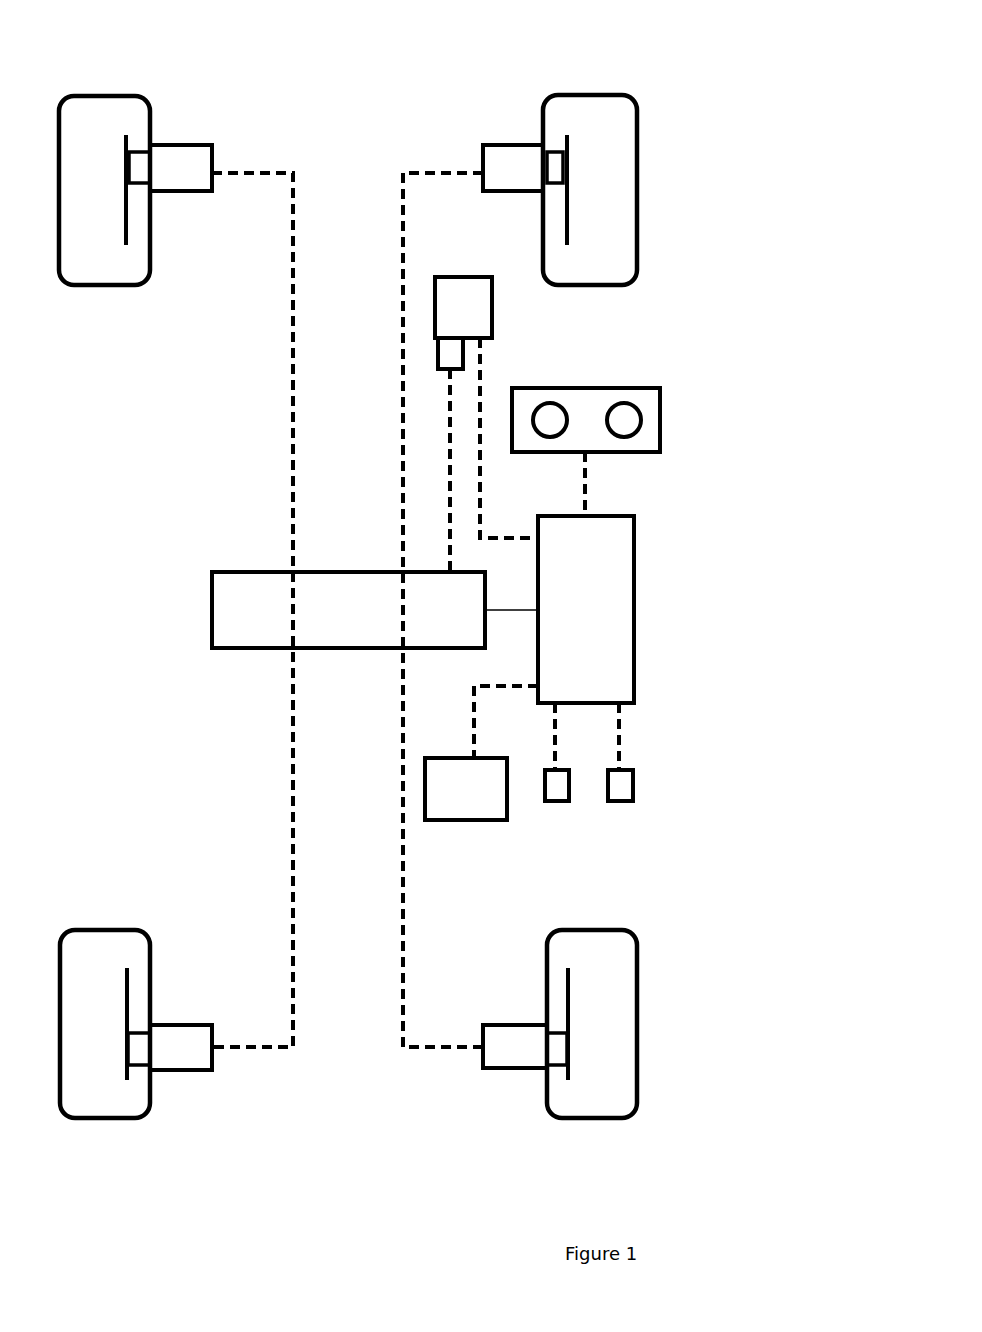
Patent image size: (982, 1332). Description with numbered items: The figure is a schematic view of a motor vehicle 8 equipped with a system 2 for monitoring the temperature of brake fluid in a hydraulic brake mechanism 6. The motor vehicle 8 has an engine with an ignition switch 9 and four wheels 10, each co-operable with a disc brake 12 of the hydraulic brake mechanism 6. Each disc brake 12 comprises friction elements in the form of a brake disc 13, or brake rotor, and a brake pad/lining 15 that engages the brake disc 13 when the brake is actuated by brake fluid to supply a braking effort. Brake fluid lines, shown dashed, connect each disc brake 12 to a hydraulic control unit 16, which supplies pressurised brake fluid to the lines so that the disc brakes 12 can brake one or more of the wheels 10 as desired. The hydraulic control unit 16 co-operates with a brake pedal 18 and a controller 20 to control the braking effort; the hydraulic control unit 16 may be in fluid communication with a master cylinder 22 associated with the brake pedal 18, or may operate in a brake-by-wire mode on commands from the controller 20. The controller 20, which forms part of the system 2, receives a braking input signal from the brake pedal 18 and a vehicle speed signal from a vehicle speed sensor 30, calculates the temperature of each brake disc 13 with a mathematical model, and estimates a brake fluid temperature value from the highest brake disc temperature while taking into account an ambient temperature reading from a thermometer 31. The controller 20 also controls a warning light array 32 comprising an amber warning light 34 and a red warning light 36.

The system 2 is at (670, 593).
The hydraulic brake mechanism 6 is at (207, 545).
The motor vehicle 8 is at (705, 255).
The ignition switch 9 is at (485, 801).
The wheel 10 is at (607, 118).
The disc brake 12 is at (172, 122).
The brake disc 13 is at (127, 233).
The brake pad/lining 15 is at (140, 160).
The hydraulic control unit 16 is at (253, 625).
The brake pedal 18 is at (485, 292).
The controller 20 is at (613, 555).
The master cylinder 22 is at (450, 353).
The vehicle speed sensor 30 is at (625, 780).
The thermometer 31 is at (558, 788).
The warning light array 32 is at (587, 395).
The amber warning light 34 is at (547, 413).
The red warning light 36 is at (627, 415).